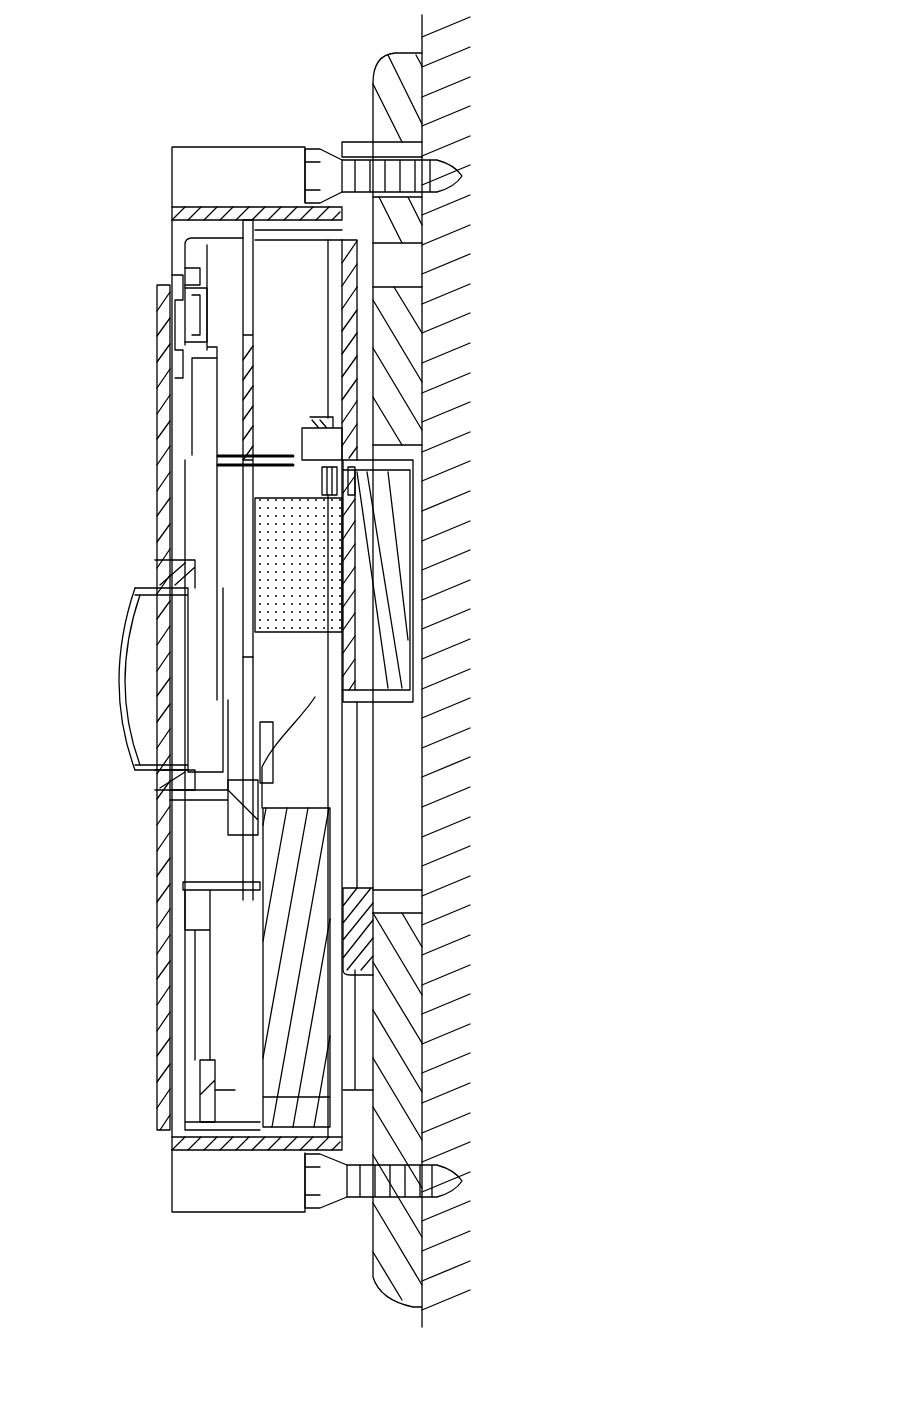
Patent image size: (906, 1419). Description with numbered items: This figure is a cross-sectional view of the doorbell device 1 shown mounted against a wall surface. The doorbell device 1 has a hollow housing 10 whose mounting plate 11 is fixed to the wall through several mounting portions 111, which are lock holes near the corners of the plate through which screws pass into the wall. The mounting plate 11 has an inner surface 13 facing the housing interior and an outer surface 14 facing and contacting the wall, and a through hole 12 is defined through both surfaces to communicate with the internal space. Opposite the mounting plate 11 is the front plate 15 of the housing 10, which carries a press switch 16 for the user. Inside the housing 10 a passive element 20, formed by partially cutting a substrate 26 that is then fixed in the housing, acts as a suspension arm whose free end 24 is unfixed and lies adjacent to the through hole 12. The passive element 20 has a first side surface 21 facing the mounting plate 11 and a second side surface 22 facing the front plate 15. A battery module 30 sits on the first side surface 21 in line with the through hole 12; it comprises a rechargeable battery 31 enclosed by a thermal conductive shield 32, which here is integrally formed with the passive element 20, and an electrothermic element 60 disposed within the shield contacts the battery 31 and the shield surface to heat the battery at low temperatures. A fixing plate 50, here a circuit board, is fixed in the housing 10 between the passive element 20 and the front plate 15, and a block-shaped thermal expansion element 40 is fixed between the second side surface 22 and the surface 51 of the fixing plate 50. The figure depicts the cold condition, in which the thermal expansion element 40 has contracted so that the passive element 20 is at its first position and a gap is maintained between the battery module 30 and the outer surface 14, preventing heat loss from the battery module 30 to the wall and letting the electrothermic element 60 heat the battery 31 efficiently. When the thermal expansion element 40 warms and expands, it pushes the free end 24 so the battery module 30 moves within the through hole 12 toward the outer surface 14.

The doorbell device 1 is at (162, 122).
The housing 10 is at (192, 210).
The mounting plate 11 is at (395, 82).
The mounting portion 111 is at (343, 177).
The through hole 12 is at (377, 838).
The inner surface 13 is at (342, 302).
The outer surface 14 is at (422, 113).
The front plate 15 is at (158, 306).
The press switch 16 is at (110, 688).
The passive element 20 is at (340, 417).
The first side surface 21 is at (357, 412).
The second side surface 22 is at (340, 383).
The free end 24 is at (250, 800).
The substrate 26 is at (353, 1103).
The battery module 30 is at (535, 560).
The battery 31 is at (378, 553).
The thermal conductive shield 32 is at (408, 610).
The thermal expansion element 40 is at (275, 512).
The fixing plate 50 is at (248, 468).
The surface 51 is at (350, 480).
The electrothermic element 60 is at (355, 492).